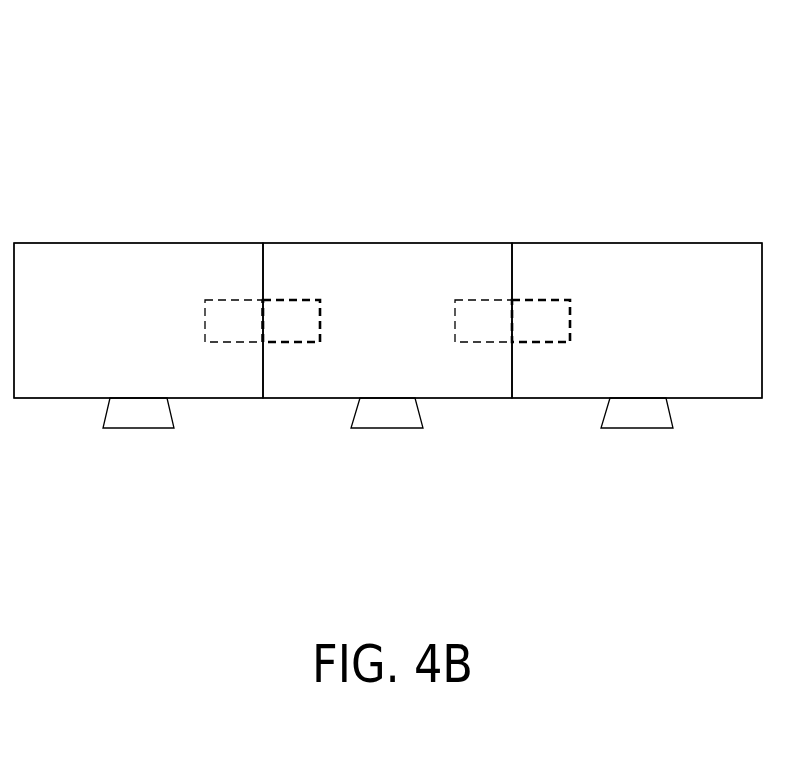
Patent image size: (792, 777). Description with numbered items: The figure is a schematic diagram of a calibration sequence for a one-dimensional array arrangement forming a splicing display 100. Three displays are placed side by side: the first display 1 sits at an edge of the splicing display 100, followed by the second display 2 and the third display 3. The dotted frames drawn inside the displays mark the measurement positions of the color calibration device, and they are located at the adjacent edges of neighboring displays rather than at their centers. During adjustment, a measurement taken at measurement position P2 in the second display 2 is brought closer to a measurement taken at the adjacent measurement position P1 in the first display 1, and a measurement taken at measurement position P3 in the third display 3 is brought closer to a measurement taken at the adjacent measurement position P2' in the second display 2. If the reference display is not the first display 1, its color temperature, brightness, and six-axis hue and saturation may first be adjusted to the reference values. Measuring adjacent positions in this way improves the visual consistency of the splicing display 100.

The splicing display 100 is at (541, 74).
The first display 1 is at (138, 320).
The second display 2 is at (387, 320).
The third display 3 is at (637, 320).
The measurement position P1 is at (228, 312).
The measurement position P2 is at (291, 274).
The measurement position P2' is at (483, 274).
The measurement position P3 is at (545, 312).